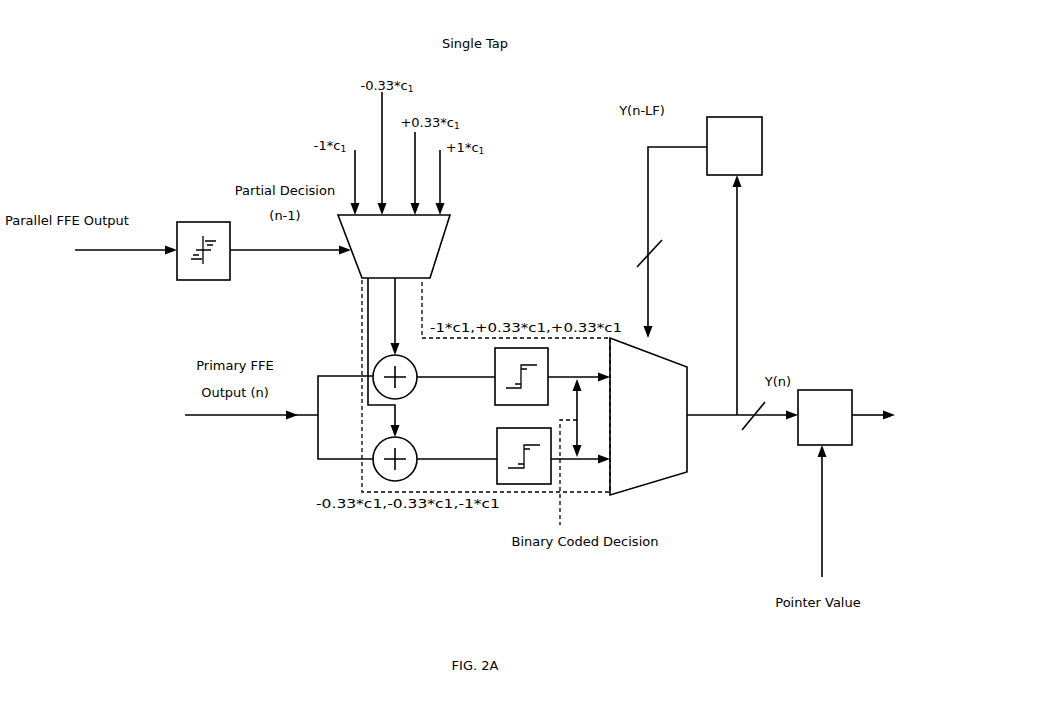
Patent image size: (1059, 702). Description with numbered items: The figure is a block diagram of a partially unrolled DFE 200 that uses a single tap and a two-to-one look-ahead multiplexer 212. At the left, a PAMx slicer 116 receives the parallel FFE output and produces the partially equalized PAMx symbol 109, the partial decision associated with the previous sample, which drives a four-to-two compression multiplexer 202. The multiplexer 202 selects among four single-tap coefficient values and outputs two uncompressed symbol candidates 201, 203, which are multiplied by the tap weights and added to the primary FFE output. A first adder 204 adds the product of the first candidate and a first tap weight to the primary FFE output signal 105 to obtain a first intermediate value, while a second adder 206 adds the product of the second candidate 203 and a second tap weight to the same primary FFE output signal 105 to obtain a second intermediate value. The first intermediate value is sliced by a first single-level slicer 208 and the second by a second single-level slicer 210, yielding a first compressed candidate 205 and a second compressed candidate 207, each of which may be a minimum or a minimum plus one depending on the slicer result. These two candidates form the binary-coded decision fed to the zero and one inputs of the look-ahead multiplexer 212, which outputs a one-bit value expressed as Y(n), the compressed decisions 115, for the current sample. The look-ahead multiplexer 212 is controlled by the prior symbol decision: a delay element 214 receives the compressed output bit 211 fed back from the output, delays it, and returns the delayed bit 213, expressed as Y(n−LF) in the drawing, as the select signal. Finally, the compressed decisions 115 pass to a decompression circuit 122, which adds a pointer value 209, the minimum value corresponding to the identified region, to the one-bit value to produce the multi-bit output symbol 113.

The partially unrolled DFE 200 is at (165, 52).
The PAMx slicer 116 is at (203, 222).
The partially equalized PAMx symbol 109 is at (283, 254).
The multiplexer 202 is at (441, 243).
The first symbol candidate 201 is at (398, 306).
The second symbol candidate 203 is at (366, 309).
The first adder 204 is at (378, 362).
The second adder 206 is at (377, 450).
The primary FFE output signal 105 is at (252, 417).
The first single-level slicer 208 is at (495, 369).
The second single-level slicer 210 is at (497, 453).
The first compressed candidate 205 is at (610, 369).
The second compressed candidate 207 is at (592, 466).
The look-ahead multiplexer 212 is at (655, 352).
The delayed bit 213 is at (648, 160).
The delay element 214 is at (747, 117).
The bit 211 is at (737, 241).
The compressed decisions 115 is at (705, 417).
The decompression circuit 122 is at (825, 417).
The symbol 113 is at (866, 417).
The pointer value 209 is at (823, 501).